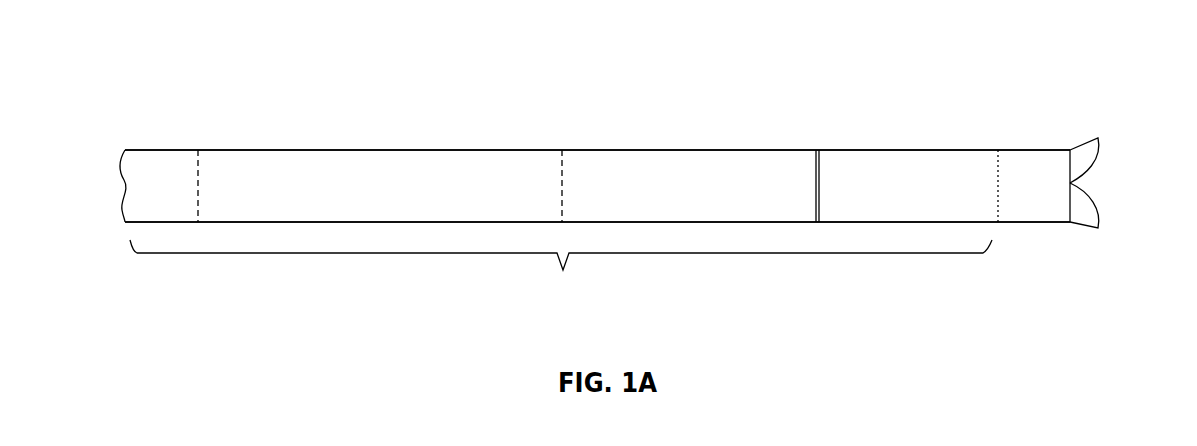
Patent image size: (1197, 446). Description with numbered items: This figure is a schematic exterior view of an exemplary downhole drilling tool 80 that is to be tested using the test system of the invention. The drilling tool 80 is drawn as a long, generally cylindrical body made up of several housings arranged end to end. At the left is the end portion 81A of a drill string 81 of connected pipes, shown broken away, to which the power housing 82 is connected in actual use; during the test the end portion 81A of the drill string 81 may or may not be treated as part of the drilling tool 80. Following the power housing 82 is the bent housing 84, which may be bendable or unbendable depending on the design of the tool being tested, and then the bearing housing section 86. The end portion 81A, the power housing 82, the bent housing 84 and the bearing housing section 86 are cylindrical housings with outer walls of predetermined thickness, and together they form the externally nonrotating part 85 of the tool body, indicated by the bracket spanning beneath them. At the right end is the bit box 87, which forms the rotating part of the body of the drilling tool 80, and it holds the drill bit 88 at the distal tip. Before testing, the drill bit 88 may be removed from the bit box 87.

The downhole drilling tool 80 is at (806, 75).
The drill string 81 is at (150, 148).
The end portion of drill string 81A is at (170, 168).
The power housing 82 is at (345, 150).
The bent housing 84 is at (672, 150).
The nonrotating part 85 is at (694, 255).
The bearing housing section 86 is at (873, 150).
The bit box 87 is at (1020, 222).
The drill bit 88 is at (1093, 200).